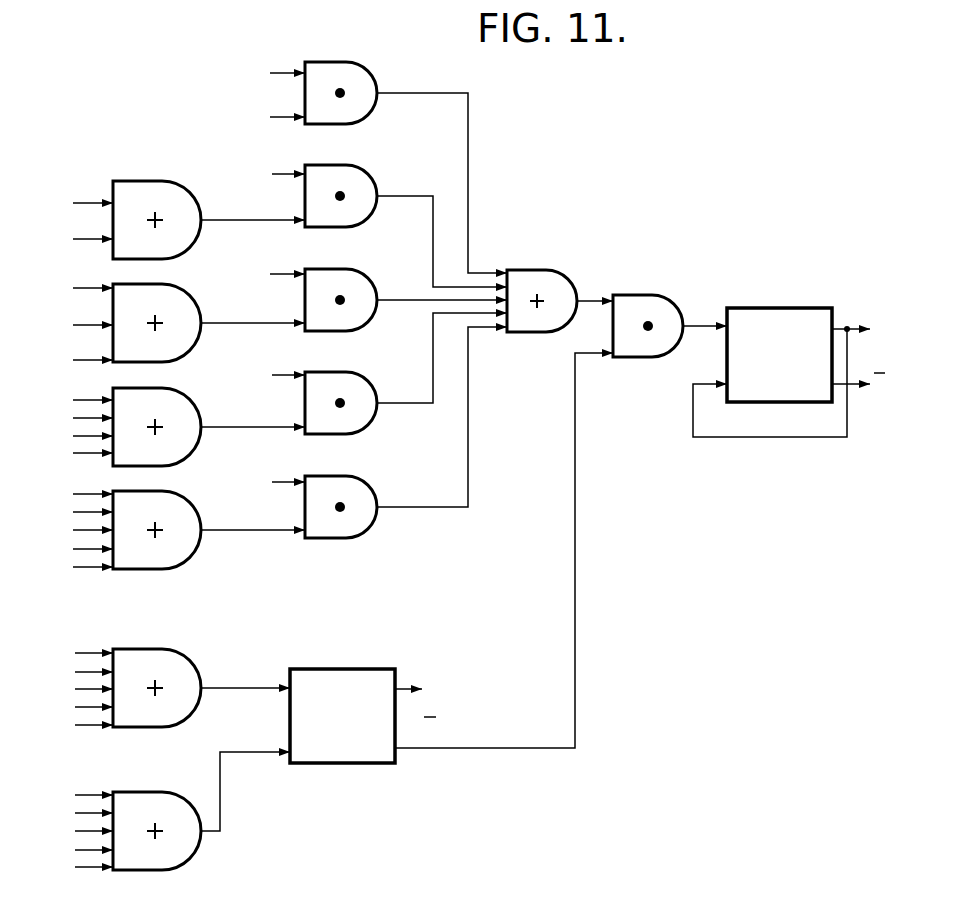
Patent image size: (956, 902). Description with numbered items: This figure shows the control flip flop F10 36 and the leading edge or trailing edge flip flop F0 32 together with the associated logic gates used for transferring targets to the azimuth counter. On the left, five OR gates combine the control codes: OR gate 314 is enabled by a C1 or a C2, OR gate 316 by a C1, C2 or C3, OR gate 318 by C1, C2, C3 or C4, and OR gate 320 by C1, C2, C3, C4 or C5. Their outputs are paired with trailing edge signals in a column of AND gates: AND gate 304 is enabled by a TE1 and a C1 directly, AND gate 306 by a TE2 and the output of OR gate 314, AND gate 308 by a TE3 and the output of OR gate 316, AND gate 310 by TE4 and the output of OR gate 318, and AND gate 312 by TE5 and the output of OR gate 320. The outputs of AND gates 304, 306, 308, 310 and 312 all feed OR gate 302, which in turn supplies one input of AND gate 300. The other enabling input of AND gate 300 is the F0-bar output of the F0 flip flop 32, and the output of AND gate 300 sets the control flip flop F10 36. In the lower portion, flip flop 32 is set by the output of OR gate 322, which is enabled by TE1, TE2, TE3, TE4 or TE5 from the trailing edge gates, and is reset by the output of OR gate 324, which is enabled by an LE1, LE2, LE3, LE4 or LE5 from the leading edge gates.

The AND gate 304 is at (366, 69).
The AND gate 306 is at (366, 172).
The AND gate 308 is at (366, 276).
The AND gate 310 is at (366, 379).
The AND gate 312 is at (366, 483).
The OR gate 314 is at (193, 188).
The OR gate 316 is at (197, 297).
The OR gate 318 is at (197, 403).
The OR gate 320 is at (185, 495).
The OR gate 322 is at (163, 680).
The OR gate 324 is at (163, 813).
The OR gate 302 is at (562, 270).
The AND gate 300 is at (670, 296).
The control flip flop F10 36 is at (729, 307).
The F0 flip flop 32 is at (397, 668).